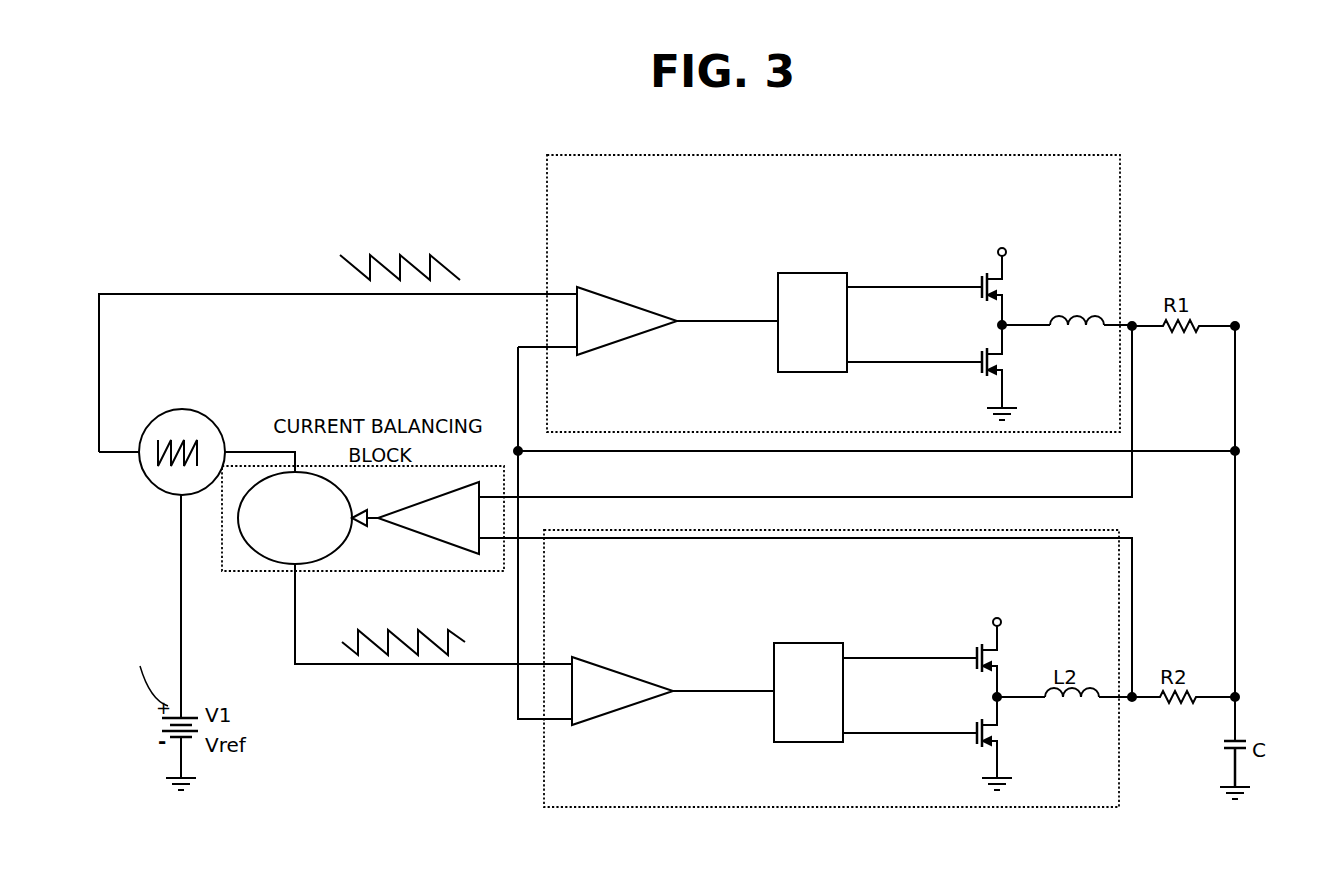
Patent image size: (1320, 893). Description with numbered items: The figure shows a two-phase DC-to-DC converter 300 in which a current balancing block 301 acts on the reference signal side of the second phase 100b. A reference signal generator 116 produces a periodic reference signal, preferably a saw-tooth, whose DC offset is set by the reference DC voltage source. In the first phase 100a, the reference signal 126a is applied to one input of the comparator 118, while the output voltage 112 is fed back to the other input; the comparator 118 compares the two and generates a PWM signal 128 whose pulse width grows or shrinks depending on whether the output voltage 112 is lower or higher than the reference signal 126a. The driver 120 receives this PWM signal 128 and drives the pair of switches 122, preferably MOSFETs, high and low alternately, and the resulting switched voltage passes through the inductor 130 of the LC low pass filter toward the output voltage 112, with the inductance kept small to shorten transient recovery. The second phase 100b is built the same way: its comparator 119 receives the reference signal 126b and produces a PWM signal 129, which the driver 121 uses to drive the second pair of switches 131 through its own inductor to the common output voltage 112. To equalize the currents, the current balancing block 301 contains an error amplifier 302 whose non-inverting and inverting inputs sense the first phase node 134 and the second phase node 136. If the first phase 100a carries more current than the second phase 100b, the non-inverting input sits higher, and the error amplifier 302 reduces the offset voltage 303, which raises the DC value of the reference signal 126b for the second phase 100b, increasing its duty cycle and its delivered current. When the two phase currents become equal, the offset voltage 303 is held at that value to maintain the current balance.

The two-phase DC-to-DC converter 300 is at (280, 70).
The first phase 100a is at (917, 155).
The second phase 100b is at (915, 807).
The reference signal generator 116 is at (205, 412).
The comparator 118 is at (607, 297).
The comparator of the second phase 119 is at (603, 667).
The driver 120 is at (818, 273).
The driver of the second phase 121 is at (814, 643).
The pair of switches 122 is at (1025, 250).
The pair of switches of the second phase 131 is at (1025, 621).
The reference signal of the first phase 126a is at (405, 250).
The reference signal of the second phase 126b is at (405, 668).
The PWM signal 128 is at (683, 318).
The PWM signal of the second phase 129 is at (679, 688).
The inductor 130 is at (1101, 323).
The first phase output node 134 is at (1137, 334).
The second phase output node 136 is at (1137, 706).
The output voltage Vout 112 is at (1240, 447).
The current balancing block 301 is at (472, 571).
The error amplifier 302 is at (400, 525).
The offset voltage 303 is at (280, 572).